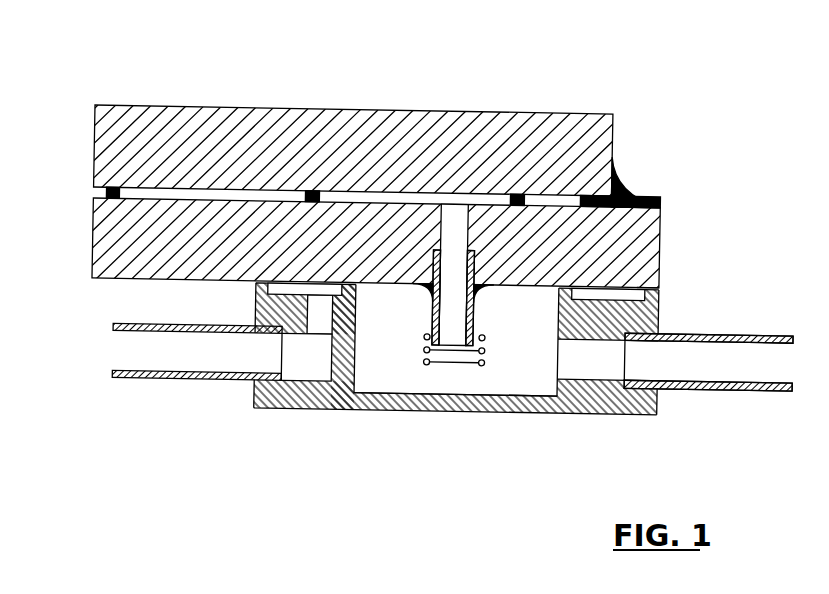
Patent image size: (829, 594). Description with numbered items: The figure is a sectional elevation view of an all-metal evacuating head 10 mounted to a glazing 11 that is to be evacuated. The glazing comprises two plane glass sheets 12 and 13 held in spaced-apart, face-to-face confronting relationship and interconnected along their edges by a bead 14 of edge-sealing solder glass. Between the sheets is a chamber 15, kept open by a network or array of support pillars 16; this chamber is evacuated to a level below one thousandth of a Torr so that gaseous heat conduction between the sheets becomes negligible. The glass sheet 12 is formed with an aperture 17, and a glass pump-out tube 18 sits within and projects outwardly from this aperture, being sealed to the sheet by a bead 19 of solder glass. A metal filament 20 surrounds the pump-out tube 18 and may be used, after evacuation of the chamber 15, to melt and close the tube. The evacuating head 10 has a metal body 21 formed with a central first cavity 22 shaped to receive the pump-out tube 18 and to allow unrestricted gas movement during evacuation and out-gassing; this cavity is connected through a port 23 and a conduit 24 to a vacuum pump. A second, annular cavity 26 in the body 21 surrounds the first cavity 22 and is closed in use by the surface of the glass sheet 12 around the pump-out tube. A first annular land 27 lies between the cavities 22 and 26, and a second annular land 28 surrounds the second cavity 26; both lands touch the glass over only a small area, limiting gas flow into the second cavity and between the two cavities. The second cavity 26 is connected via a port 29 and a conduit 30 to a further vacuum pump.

The evacuating head 10 is at (563, 422).
The glazing 11 is at (658, 177).
The glass sheet 12 is at (103, 252).
The glass sheet 13 is at (115, 157).
The bead of edge-sealing solder glass 14 is at (628, 168).
The chamber 15 is at (95, 192).
The support pillars 16 is at (318, 190).
The aperture 17 is at (455, 225).
The pump-out tube 18 is at (477, 310).
The bead of solder glass 19 is at (485, 296).
The metal filament 20 is at (486, 367).
The metal body 21 is at (435, 400).
The first cavity 22 is at (400, 379).
The port 23 is at (597, 360).
The conduit 24 is at (708, 392).
The second annular cavity 26 is at (293, 287).
The first annular land 27 is at (348, 275).
The second annular land 28 is at (657, 284).
The port 29 is at (320, 352).
The conduit 30 is at (170, 380).